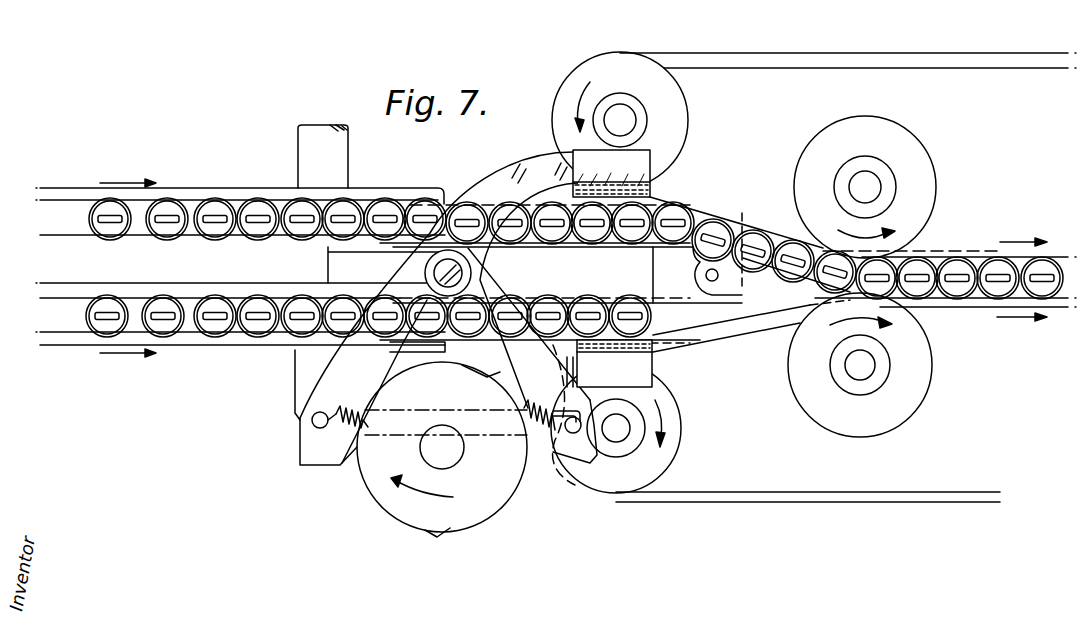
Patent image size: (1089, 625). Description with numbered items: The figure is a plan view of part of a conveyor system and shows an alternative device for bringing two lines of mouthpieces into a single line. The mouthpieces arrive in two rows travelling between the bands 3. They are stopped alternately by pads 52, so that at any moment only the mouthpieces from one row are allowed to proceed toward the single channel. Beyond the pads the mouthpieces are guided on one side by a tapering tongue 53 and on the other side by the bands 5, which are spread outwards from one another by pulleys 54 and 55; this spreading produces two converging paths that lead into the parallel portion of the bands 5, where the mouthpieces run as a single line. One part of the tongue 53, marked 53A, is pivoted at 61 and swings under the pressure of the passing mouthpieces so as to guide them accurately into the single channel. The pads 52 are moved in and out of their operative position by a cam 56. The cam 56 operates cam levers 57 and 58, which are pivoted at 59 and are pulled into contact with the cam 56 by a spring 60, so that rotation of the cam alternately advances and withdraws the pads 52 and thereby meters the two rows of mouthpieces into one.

The bands 3 is at (372, 197).
The bands 5 is at (978, 255).
The pads 52 is at (655, 184).
The tapering tongue 53 is at (662, 277).
The pivoted part of tongue 53A is at (765, 285).
The pulley 54 is at (908, 402).
The pulley 55 is at (682, 440).
The cam 56 is at (455, 515).
The cam lever 57 is at (308, 447).
The cam lever 58 is at (578, 455).
The pivot 59 is at (452, 273).
The spring 60 is at (528, 435).
The pivot 61 is at (718, 268).